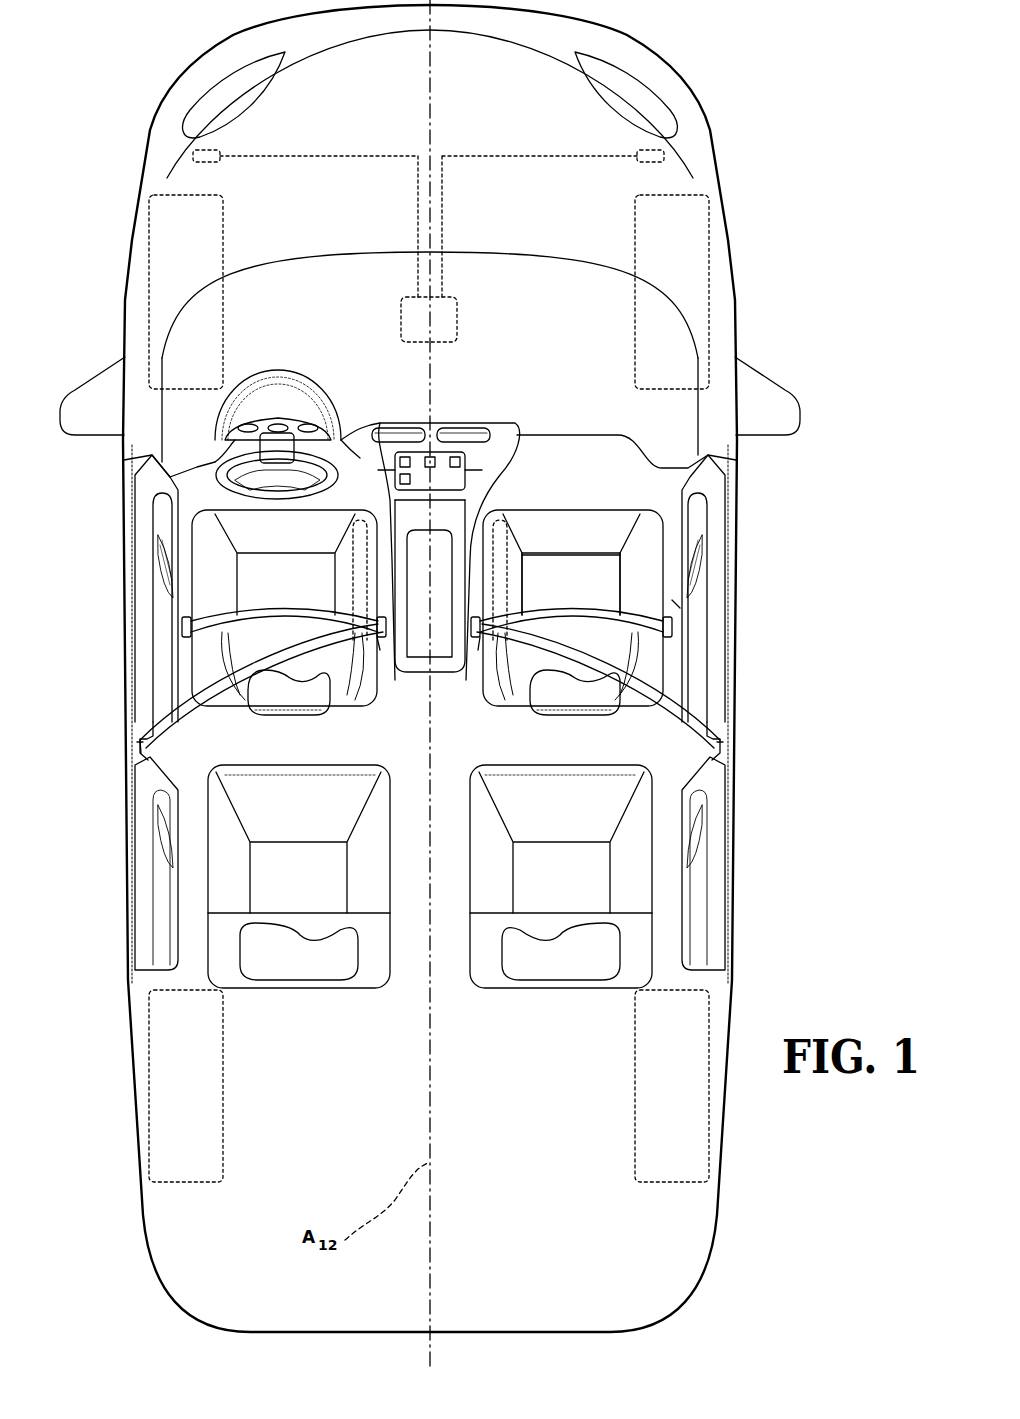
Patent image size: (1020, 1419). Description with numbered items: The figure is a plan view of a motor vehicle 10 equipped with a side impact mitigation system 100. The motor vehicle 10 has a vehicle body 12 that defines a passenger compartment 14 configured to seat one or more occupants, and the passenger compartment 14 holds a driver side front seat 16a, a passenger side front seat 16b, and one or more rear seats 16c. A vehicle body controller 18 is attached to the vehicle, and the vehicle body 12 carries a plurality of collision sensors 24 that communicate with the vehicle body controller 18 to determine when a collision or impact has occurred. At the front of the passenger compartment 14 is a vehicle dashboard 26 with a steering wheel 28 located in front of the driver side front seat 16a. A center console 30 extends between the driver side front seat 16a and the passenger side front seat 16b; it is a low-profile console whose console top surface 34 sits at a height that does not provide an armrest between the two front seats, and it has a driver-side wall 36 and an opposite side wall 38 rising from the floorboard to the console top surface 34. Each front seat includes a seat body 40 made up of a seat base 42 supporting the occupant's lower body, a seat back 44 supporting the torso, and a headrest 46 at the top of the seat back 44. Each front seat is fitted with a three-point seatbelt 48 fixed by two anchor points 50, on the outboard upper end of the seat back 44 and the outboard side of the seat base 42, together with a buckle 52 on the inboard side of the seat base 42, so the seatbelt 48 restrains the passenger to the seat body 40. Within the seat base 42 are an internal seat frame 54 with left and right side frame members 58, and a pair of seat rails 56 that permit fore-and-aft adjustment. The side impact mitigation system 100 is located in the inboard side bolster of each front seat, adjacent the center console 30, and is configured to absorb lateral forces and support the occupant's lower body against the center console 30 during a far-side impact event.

The motor vehicle 10 is at (857, 103).
The vehicle body 12 is at (722, 215).
The passenger compartment 14 is at (648, 737).
The driver side front seat 16a is at (222, 560).
The passenger side front seat 16b is at (643, 579).
The rear seats 16c is at (650, 880).
The vehicle body controller 18 is at (457, 328).
The collision sensors 24 is at (193, 156).
The vehicle dashboard 26 is at (628, 410).
The steering wheel 28 is at (213, 478).
The center console 30 is at (435, 631).
The console top surface 34 is at (440, 632).
The driver-side wall 36 is at (384, 650).
The side wall 38 is at (477, 650).
The seat body 40 is at (208, 675).
The seat base 42 is at (215, 603).
The seat back 44 is at (212, 650).
The headrest 46 is at (260, 690).
The three-point seatbelt 48 is at (202, 700).
The anchor points 50 is at (135, 745).
The buckle 52 is at (545, 697).
The internal seat frame 54 is at (578, 580).
The seat rails 56 is at (512, 567).
The side frame members 58 is at (640, 552).
The side impact mitigation system 100 is at (360, 520).